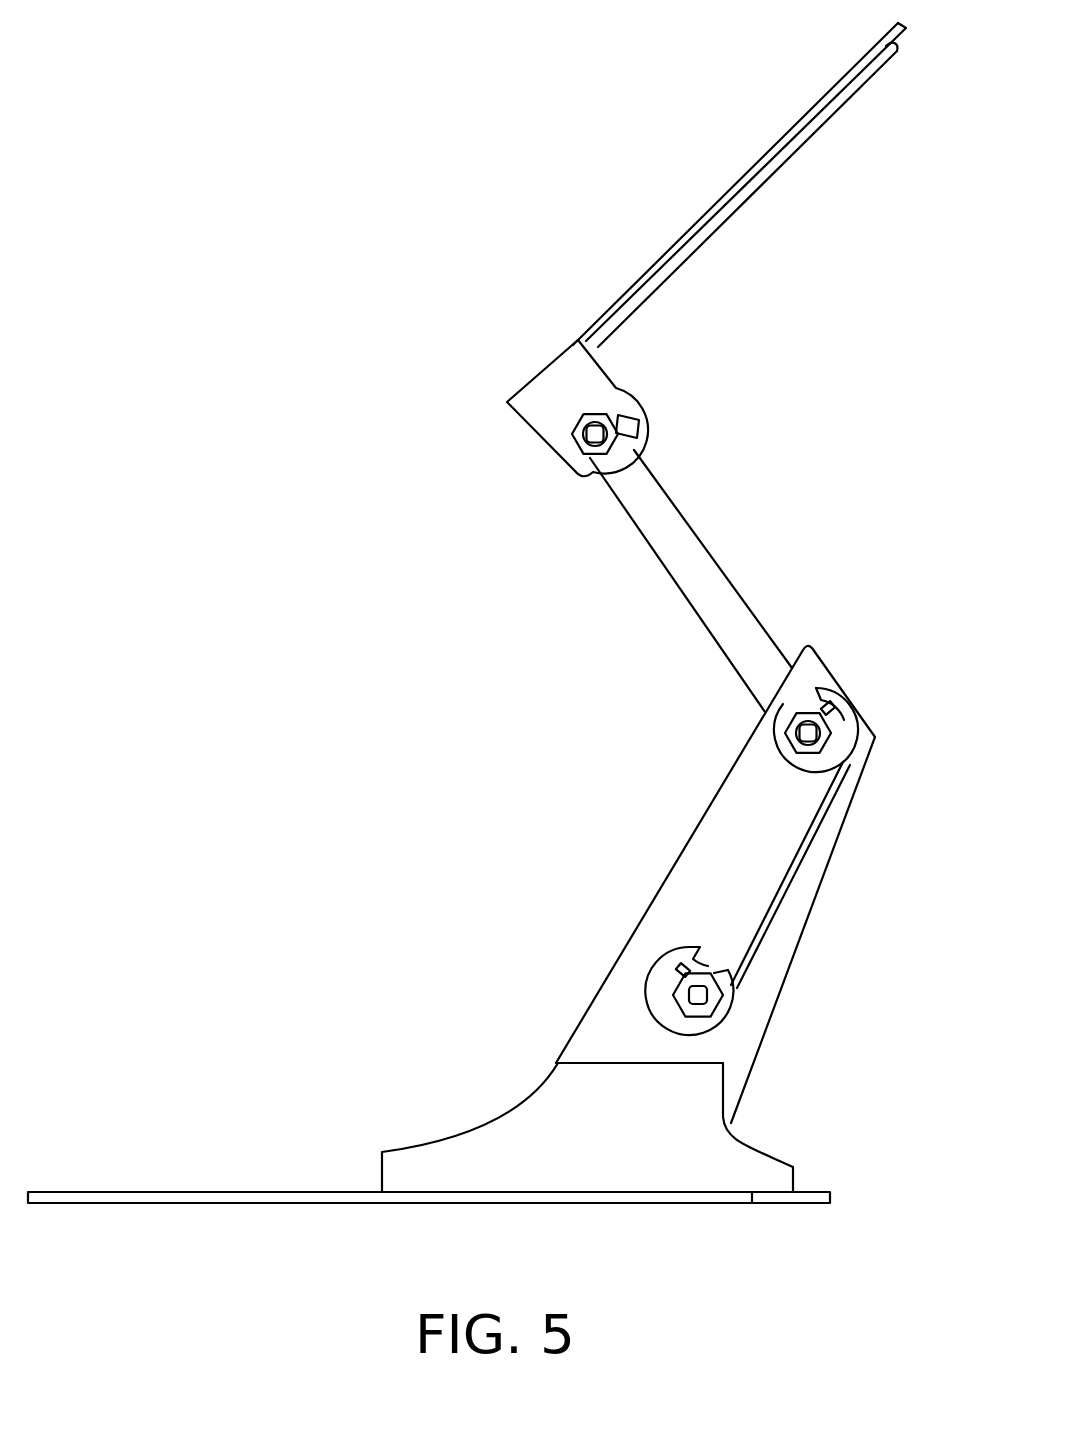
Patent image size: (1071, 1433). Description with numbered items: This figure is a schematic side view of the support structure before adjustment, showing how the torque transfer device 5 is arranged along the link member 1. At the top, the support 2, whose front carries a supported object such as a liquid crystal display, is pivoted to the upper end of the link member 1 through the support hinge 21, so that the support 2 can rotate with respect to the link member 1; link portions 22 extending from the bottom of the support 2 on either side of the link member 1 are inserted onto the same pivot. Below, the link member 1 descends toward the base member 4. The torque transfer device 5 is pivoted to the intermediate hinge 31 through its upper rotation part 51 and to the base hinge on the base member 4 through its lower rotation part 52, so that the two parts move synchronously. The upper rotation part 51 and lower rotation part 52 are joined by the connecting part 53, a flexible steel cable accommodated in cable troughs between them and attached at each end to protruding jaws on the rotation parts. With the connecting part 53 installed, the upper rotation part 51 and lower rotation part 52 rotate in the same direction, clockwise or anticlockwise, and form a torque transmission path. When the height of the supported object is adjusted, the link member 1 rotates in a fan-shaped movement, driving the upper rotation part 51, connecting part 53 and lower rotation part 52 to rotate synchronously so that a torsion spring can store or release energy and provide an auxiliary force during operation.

The link member 1 is at (677, 547).
The support 2 is at (707, 208).
The support hinge 21 is at (600, 417).
The link portion 22 is at (543, 420).
The intermediate hinge 31 is at (806, 735).
The base member 4 is at (212, 1192).
The torque transfer device 5 is at (748, 898).
The upper rotation part 51 is at (842, 742).
The lower rotation part 52 is at (660, 995).
The connecting part 53 is at (783, 875).